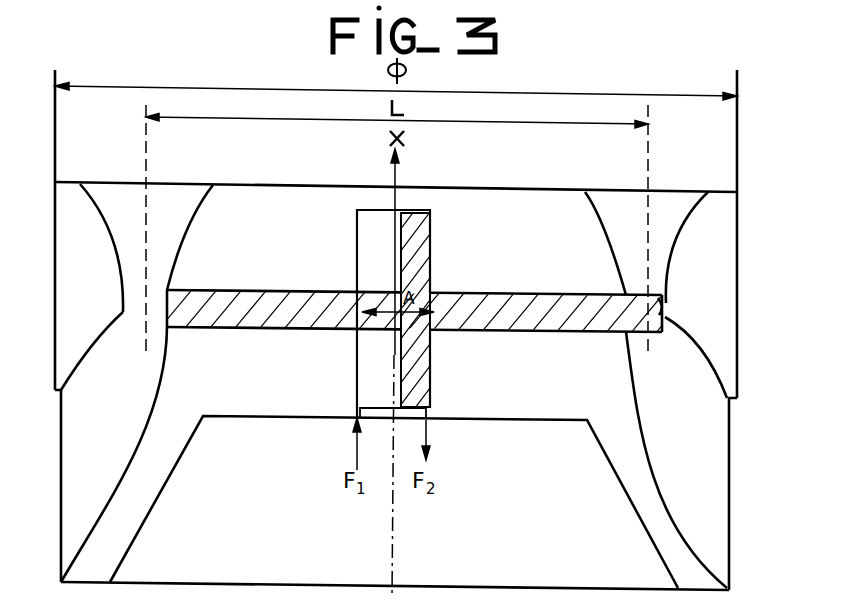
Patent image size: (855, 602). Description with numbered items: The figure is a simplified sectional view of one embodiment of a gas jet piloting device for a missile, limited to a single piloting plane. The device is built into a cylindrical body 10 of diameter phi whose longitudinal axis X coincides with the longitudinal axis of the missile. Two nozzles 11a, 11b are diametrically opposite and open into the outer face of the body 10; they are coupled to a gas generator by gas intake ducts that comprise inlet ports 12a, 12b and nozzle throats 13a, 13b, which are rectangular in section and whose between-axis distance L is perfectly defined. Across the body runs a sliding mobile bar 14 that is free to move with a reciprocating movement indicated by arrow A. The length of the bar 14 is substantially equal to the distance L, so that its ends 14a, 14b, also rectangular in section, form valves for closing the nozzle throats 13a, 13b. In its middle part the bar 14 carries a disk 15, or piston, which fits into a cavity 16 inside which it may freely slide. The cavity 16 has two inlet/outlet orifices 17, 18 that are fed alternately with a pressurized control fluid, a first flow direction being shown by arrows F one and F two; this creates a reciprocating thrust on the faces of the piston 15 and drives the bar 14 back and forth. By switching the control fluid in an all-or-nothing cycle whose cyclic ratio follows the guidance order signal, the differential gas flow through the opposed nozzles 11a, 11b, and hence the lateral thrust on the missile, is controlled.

The cylindrical body 10 is at (737, 310).
The nozzle 11a is at (730, 488).
The nozzle 11b is at (60, 483).
The inlet port 12a is at (674, 190).
The inlet port 12b is at (120, 182).
The nozzle throat 13a is at (659, 346).
The nozzle throat 13b is at (127, 325).
The sliding mobile bar 14 is at (514, 312).
The bar end 14a is at (664, 298).
The bar end 14b is at (170, 304).
The disk 15 is at (407, 264).
The cavity 16 is at (367, 223).
The inlet/outlet orifice 17 is at (354, 420).
The inlet/outlet orifice 18 is at (431, 420).